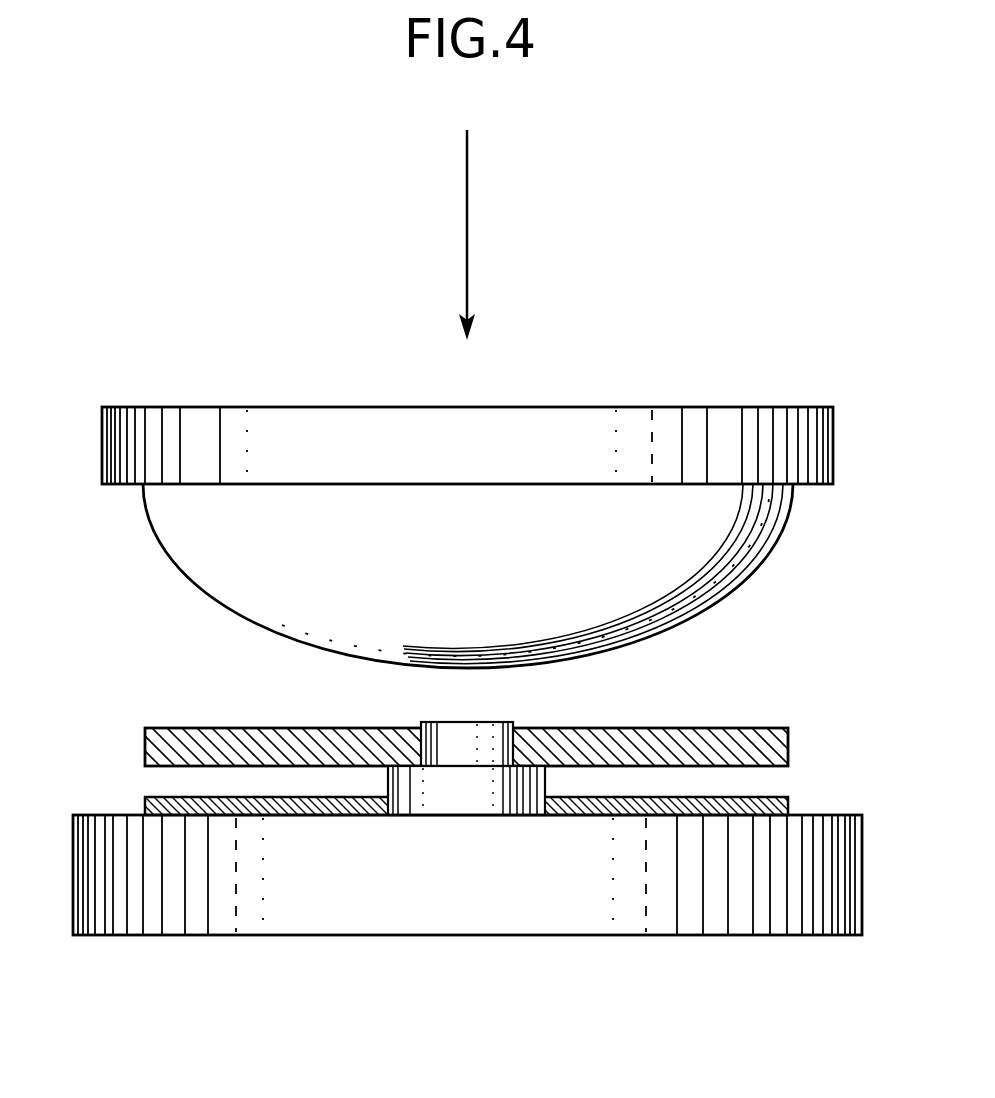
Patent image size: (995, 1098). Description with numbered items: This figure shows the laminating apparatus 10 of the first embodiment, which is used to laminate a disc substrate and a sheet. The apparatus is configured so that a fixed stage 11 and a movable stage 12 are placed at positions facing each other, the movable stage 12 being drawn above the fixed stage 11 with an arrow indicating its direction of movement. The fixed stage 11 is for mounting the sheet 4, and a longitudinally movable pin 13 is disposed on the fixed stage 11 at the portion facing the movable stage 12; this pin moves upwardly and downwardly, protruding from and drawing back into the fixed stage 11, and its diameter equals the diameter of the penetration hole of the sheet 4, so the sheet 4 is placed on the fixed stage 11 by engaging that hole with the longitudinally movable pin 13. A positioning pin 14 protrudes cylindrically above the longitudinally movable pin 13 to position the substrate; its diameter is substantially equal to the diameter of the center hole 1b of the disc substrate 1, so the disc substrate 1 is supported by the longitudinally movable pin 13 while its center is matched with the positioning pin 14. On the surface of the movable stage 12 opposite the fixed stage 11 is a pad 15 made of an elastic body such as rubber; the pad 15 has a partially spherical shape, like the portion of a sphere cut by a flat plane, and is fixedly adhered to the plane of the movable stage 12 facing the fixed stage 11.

The laminating apparatus 10 is at (133, 290).
The movable stage 12 is at (727, 447).
The pad 15 is at (202, 497).
The disc substrate 1 is at (777, 747).
The center hole 1b is at (510, 722).
The sheet 4 is at (776, 808).
The longitudinally movable pin 13 is at (428, 802).
The positioning pin 14 is at (497, 802).
The fixed stage 11 is at (215, 935).